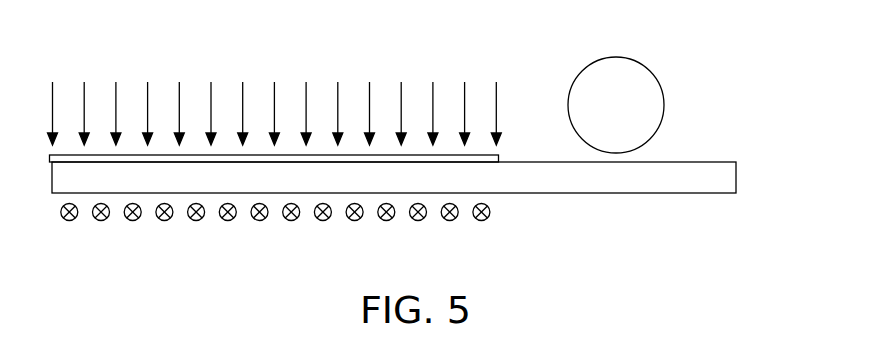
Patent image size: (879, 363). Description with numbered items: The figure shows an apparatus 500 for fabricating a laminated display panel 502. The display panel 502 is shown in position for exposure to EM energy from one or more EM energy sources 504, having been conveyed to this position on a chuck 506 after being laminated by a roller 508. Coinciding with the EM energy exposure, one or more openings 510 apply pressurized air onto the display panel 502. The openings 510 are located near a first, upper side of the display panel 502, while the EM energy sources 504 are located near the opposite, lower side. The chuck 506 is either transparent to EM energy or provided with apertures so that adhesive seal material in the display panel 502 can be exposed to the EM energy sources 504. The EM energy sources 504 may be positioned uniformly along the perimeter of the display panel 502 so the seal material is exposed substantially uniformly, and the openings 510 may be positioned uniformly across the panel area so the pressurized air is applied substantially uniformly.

The apparatus 500 is at (700, 57).
The display panel 502 is at (496, 163).
The EM energy sources 504 is at (227, 221).
The chuck 506 is at (645, 190).
The roller 508 is at (605, 58).
The openings 510 is at (401, 82).